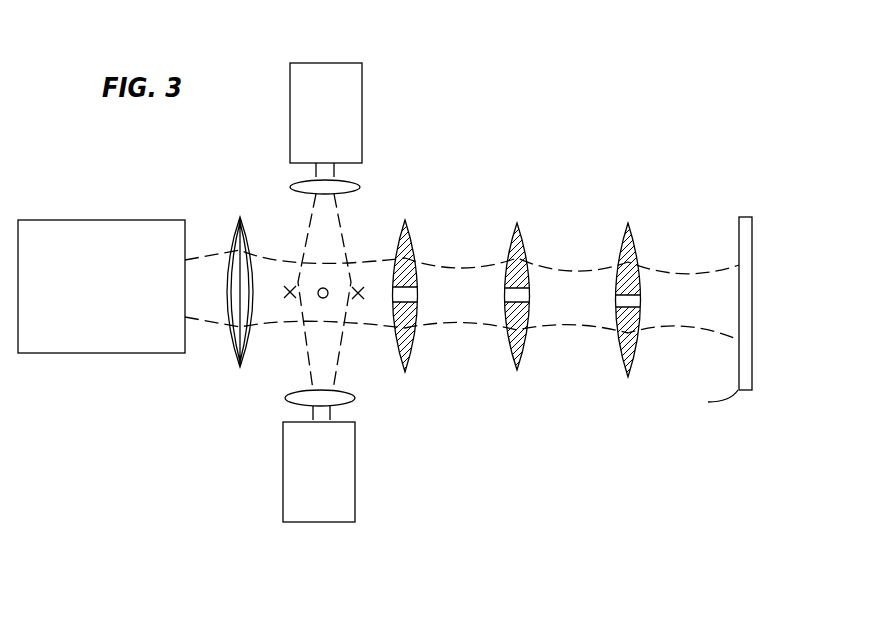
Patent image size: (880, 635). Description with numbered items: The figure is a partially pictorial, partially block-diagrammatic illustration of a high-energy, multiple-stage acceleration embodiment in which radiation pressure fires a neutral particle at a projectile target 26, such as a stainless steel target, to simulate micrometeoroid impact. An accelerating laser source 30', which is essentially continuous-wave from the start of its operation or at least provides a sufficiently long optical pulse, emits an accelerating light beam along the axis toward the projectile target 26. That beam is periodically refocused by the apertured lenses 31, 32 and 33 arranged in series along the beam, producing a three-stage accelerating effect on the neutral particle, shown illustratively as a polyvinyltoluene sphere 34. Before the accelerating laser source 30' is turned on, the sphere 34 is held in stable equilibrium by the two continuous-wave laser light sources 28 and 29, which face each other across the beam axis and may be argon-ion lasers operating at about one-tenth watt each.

The projectile target 26 is at (739, 232).
The continuous-wave laser light source 28 is at (330, 63).
The continuous-wave laser light source 29 is at (340, 523).
The accelerating laser source 30' is at (135, 277).
The apertured lens 31 is at (408, 222).
The apertured lens 32 is at (520, 224).
The apertured lens 33 is at (631, 225).
The polyvinyltoluene sphere 34 is at (327, 298).